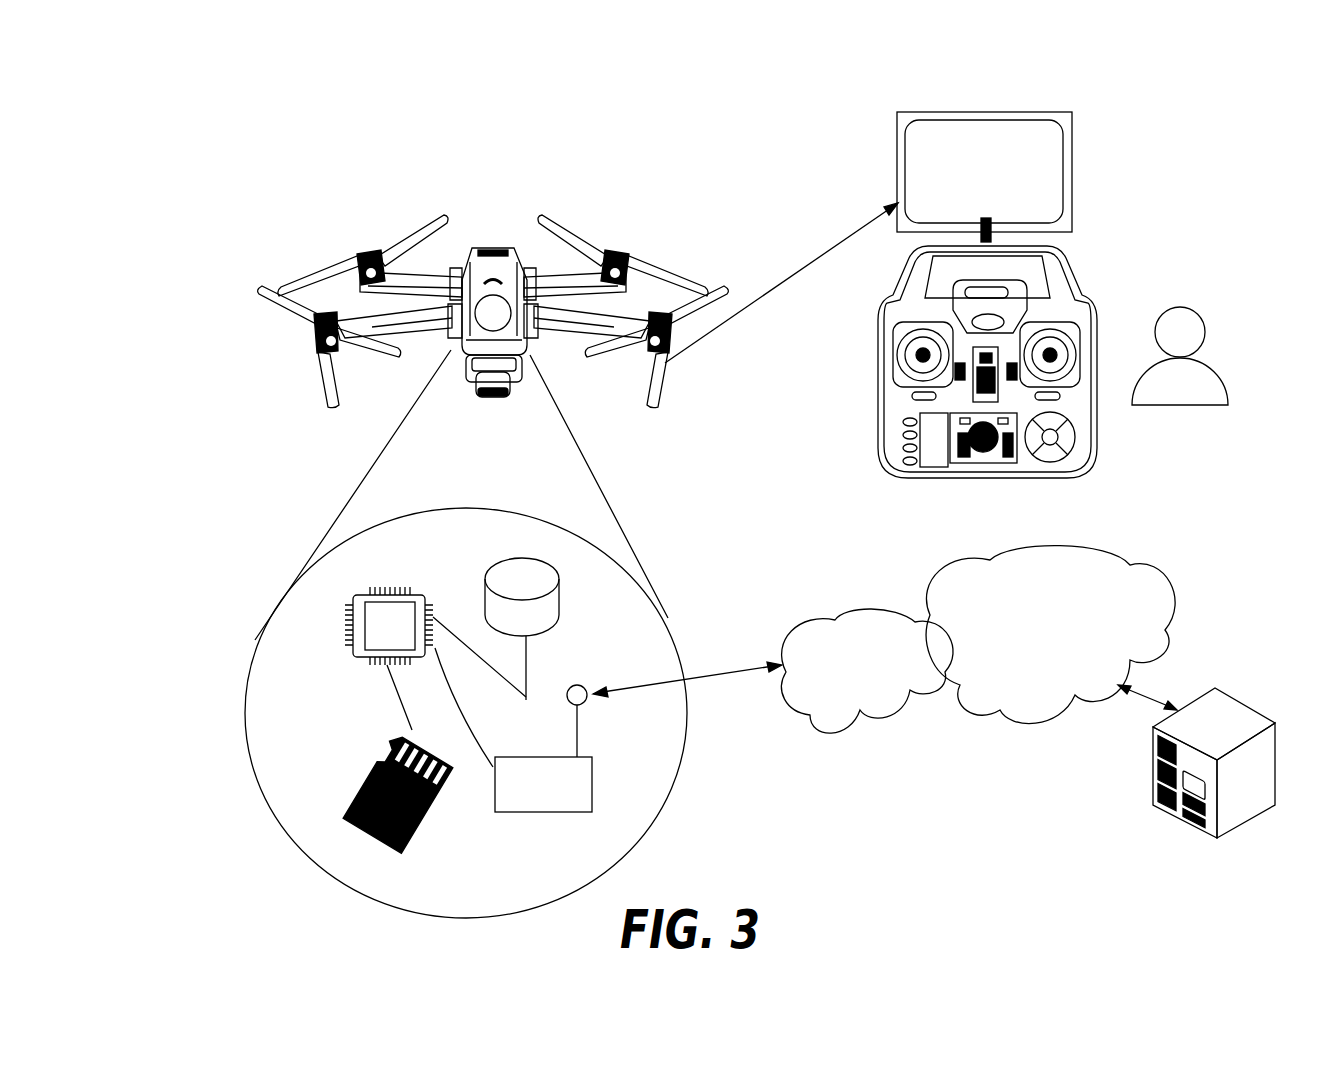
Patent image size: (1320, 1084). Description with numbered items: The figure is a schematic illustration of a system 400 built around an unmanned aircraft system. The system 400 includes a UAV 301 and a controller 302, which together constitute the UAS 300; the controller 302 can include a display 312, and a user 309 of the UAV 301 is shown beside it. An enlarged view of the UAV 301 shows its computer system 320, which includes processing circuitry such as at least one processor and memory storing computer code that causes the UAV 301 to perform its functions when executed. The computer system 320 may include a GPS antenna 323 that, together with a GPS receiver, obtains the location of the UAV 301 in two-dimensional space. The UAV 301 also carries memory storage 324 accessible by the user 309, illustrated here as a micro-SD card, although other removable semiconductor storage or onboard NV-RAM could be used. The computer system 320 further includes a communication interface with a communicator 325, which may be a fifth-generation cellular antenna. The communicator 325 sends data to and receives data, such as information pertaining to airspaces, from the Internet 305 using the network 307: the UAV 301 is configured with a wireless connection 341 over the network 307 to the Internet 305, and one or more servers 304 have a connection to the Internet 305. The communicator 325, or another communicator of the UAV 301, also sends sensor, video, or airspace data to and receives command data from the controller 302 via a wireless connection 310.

The system 400 is at (285, 143).
The UAS 300 is at (641, 310).
The UAV 301 is at (313, 377).
The controller 302 is at (951, 310).
The servers 304 is at (1153, 783).
The Internet 305 is at (1073, 679).
The network 307 is at (890, 712).
The user 309 is at (1165, 397).
The wireless connection 310 is at (710, 338).
The display 312 is at (1072, 200).
The computer system 320 is at (265, 626).
The GPS antenna 323 is at (568, 598).
The memory storage 324 is at (357, 820).
The communicator 325 is at (564, 801).
The wireless connection 341 is at (705, 682).